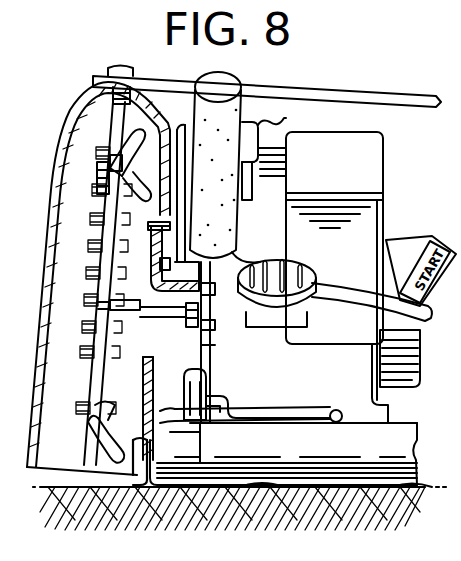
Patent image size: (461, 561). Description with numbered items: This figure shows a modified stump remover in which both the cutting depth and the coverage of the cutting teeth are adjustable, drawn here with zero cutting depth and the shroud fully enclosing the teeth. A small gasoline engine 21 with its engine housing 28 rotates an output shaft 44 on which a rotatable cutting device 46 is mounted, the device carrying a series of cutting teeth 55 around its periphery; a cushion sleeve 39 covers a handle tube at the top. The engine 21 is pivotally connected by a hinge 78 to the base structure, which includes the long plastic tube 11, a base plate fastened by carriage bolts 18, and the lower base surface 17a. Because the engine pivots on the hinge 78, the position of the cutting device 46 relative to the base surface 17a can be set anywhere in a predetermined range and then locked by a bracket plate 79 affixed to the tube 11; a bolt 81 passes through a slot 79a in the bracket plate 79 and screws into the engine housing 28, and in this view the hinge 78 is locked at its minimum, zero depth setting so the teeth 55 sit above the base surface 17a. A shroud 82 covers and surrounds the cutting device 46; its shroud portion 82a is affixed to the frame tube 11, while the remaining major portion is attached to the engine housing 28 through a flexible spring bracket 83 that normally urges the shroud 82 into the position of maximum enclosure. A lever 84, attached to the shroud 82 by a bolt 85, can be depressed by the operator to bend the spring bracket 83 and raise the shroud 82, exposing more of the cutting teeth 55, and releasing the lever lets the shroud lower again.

The plastic tube 11 is at (388, 424).
The bottom surface 17a is at (207, 487).
The carriage bolts 18 is at (262, 487).
The engine 21 is at (292, 117).
The engine housing 28 is at (384, 160).
The cushion sleeve 39 is at (222, 84).
The output shaft 44 is at (163, 309).
The rotatable cutting device 46 is at (60, 190).
The cutting teeth 55 is at (123, 150).
The hinge 78 is at (225, 423).
The bracket plate 79 is at (163, 427).
The slot 79a is at (215, 393).
The bolt 81 is at (204, 370).
The shroud 82 is at (78, 106).
The shroud portion 82a is at (135, 485).
The flexible spring bracket 83 is at (210, 250).
The lever 84 is at (415, 92).
The bolt 85 is at (124, 62).